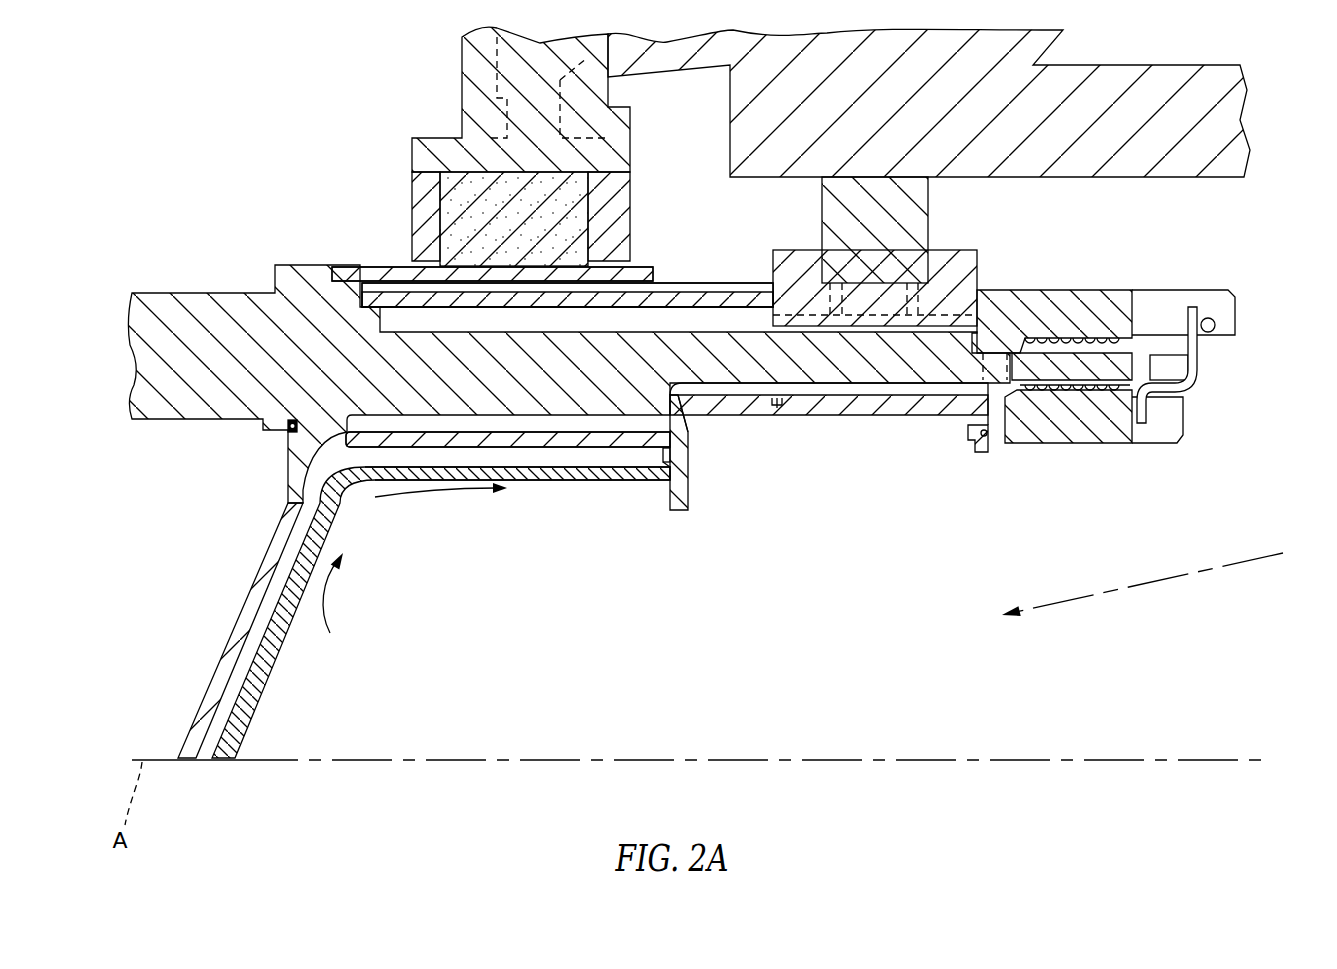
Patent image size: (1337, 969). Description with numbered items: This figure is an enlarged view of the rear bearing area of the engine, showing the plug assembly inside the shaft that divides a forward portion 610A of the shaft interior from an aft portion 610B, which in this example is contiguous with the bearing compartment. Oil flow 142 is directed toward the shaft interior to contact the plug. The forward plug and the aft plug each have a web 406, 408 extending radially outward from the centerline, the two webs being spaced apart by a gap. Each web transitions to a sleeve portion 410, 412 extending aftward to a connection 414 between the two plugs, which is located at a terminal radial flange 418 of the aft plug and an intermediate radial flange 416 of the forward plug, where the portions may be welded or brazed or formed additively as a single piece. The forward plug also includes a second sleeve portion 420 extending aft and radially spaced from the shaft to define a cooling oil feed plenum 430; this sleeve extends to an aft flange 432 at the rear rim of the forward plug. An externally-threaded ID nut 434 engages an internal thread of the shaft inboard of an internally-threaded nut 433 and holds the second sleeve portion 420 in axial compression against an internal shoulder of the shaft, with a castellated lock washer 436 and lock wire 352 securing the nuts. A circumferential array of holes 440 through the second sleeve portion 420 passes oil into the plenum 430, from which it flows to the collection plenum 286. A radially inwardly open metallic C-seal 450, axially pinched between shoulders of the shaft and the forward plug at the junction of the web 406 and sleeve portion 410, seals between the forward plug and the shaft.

The oil flow 142 is at (355, 568).
The collection plenum 286 is at (1010, 325).
The lock wire 352 is at (1216, 323).
The web 406 is at (247, 611).
The web 408 is at (262, 652).
The sleeve portion 410 is at (420, 442).
The sleeve portion 412 is at (585, 480).
The connection 414 is at (702, 469).
The intermediate radial flange 416 is at (690, 431).
The terminal radial flange 418 is at (668, 464).
The second sleeve portion 420 is at (873, 408).
The cooling oil feed plenum 430 is at (838, 405).
The aft flange 432 is at (967, 438).
The internally-threaded nut 433 is at (1082, 303).
The externally-threaded nut 434 is at (1048, 420).
The lock washer 436 is at (1198, 348).
The holes 440 is at (778, 405).
The seal 450 is at (292, 406).
The forward portion of the shaft interior 610A is at (150, 536).
The aft portion of the shaft interior 610B is at (1040, 734).